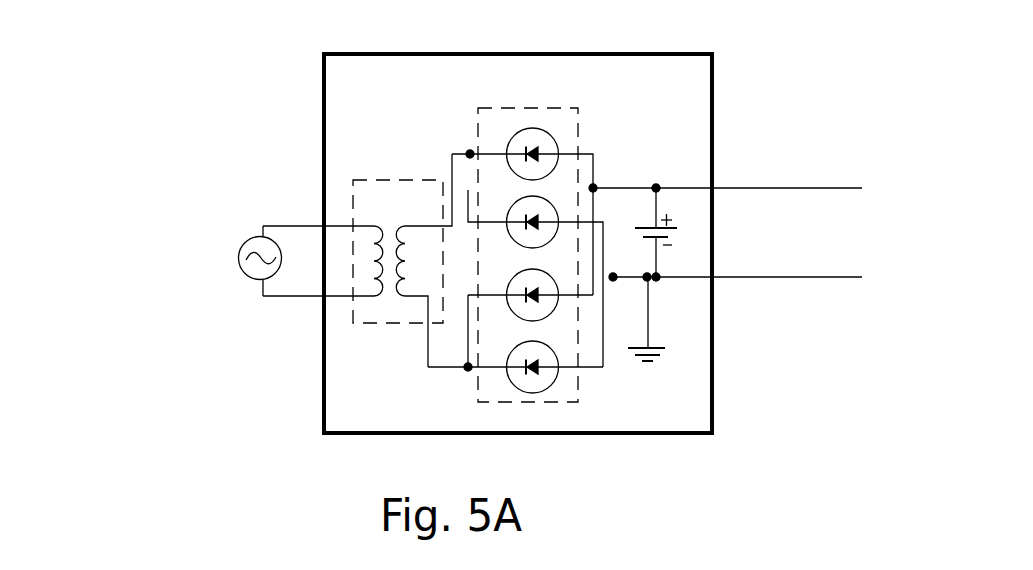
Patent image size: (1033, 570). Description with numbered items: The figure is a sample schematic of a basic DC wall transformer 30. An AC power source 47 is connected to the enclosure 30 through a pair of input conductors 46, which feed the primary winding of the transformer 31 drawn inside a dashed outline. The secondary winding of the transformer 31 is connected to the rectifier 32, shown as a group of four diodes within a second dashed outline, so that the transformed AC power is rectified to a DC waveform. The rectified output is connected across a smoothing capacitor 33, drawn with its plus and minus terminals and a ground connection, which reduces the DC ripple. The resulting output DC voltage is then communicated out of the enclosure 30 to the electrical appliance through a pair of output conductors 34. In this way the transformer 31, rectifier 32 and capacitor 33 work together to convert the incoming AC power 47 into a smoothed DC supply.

The DC wall transformer enclosure 30 is at (530, 476).
The transformer 31 is at (389, 214).
The rectifier 32 is at (509, 145).
The smoothing capacitor 33 is at (636, 228).
The output conductors 34 is at (768, 277).
The input conductors 46 is at (308, 296).
The AC power 47 is at (162, 264).